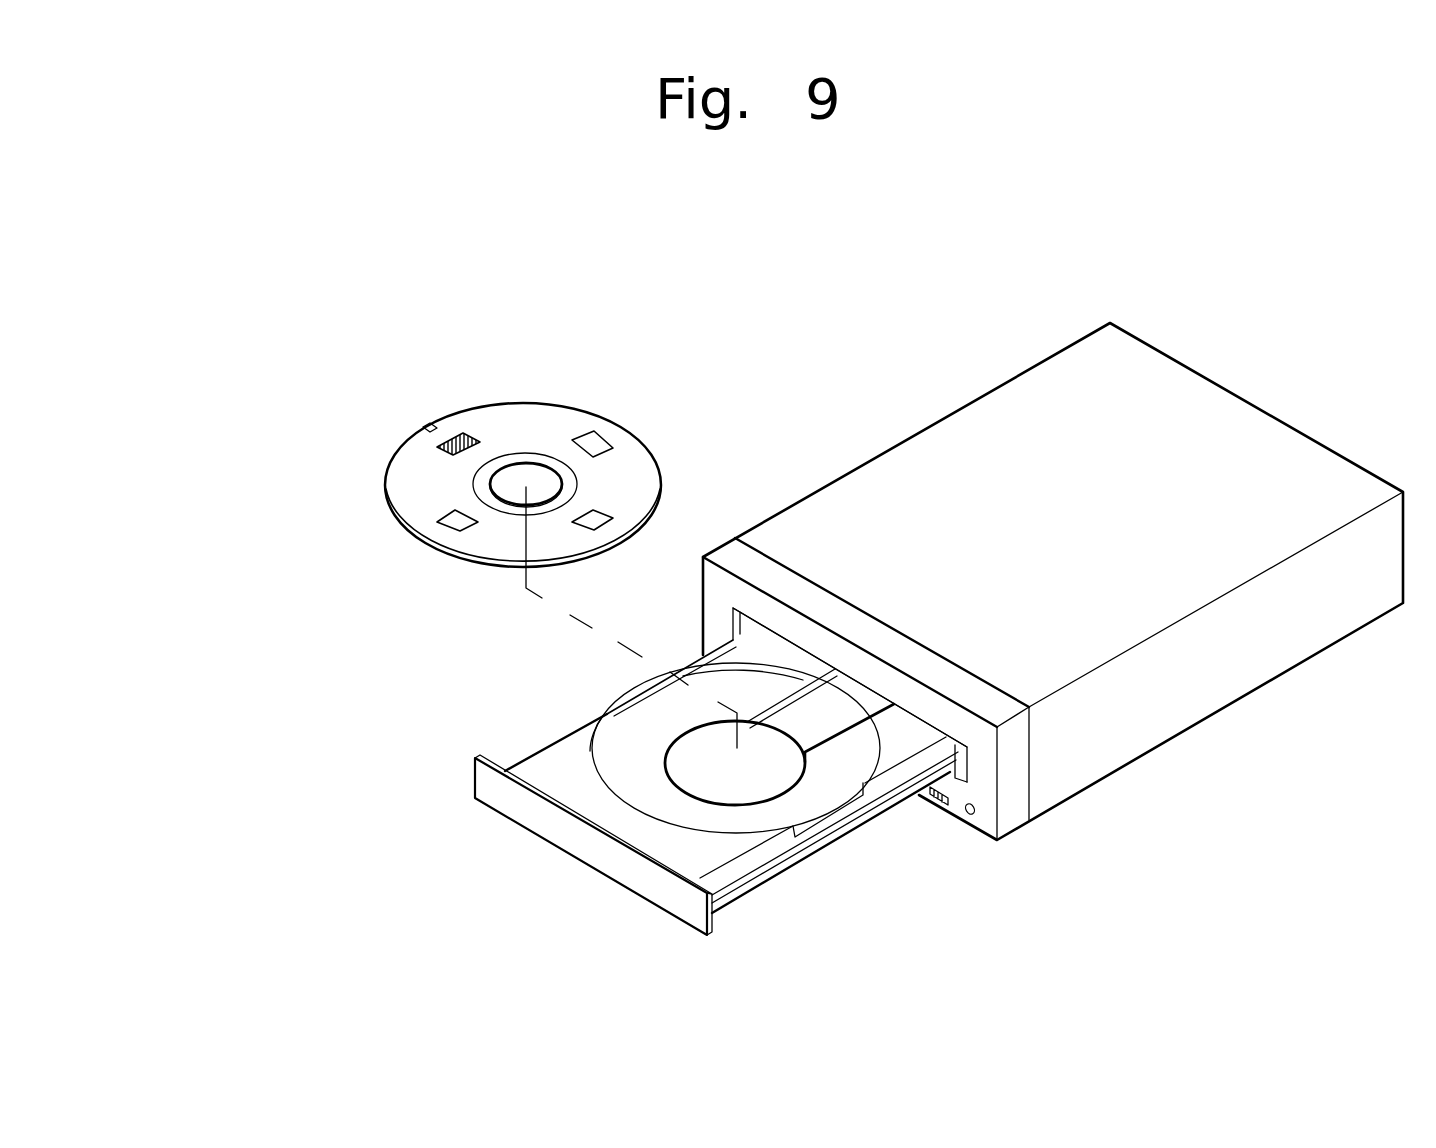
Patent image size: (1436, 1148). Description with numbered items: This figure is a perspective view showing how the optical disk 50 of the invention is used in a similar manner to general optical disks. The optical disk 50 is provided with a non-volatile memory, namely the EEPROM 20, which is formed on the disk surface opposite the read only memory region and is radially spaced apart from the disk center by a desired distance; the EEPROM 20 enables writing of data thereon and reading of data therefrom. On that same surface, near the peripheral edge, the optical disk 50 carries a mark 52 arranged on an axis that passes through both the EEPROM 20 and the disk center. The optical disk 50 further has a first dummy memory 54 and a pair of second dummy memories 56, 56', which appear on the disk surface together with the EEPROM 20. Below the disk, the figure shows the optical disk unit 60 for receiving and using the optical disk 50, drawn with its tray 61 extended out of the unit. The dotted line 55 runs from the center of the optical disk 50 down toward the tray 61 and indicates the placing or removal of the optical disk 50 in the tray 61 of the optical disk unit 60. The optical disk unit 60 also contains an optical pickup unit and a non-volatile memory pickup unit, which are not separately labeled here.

The EEPROM 20 is at (447, 424).
The optical disk 50 is at (346, 477).
The mark 52 is at (424, 424).
The first dummy memory 54 is at (598, 520).
The dotted line 55 is at (571, 619).
The second dummy memory 56 is at (640, 403).
The second dummy memory 56' is at (399, 541).
The optical disk unit 60 is at (1026, 334).
The tray 61 is at (790, 828).